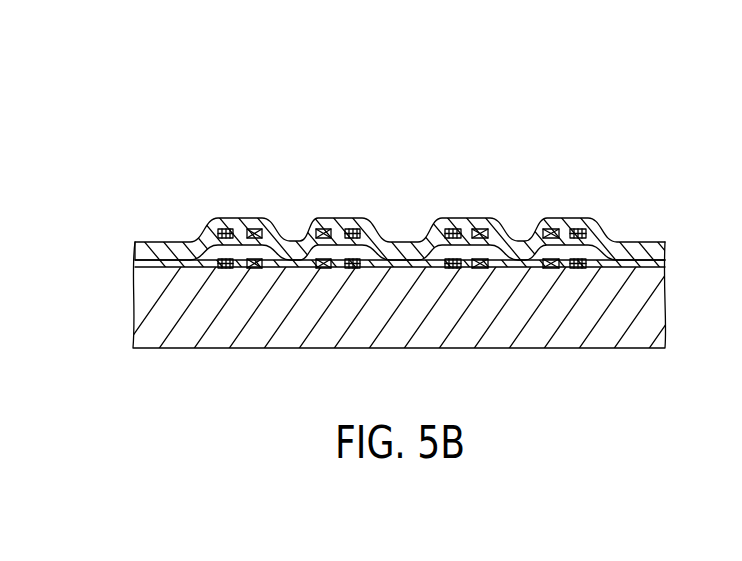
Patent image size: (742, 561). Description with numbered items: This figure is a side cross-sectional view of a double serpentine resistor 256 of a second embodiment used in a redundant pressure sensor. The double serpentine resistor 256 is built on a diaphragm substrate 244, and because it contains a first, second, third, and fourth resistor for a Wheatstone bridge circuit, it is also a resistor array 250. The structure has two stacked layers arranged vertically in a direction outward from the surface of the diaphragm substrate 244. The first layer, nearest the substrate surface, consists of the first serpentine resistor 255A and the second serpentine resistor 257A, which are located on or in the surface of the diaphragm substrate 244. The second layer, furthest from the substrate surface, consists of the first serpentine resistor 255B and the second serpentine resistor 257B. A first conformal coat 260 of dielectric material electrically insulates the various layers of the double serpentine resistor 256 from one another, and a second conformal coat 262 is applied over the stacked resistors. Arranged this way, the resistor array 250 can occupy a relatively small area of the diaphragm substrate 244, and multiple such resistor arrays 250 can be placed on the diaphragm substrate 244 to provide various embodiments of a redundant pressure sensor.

The diaphragm substrate 244 is at (150, 293).
The resistor array 250 is at (138, 195).
The first serpentine resistor 255A is at (226, 268).
The first serpentine resistor 255B is at (224, 229).
The double serpentine resistor 256 is at (241, 105).
The second serpentine resistor 257A is at (255, 268).
The second serpentine resistor 257B is at (256, 229).
The first conformal coat 260 is at (645, 263).
The second conformal coat 262 is at (640, 252).